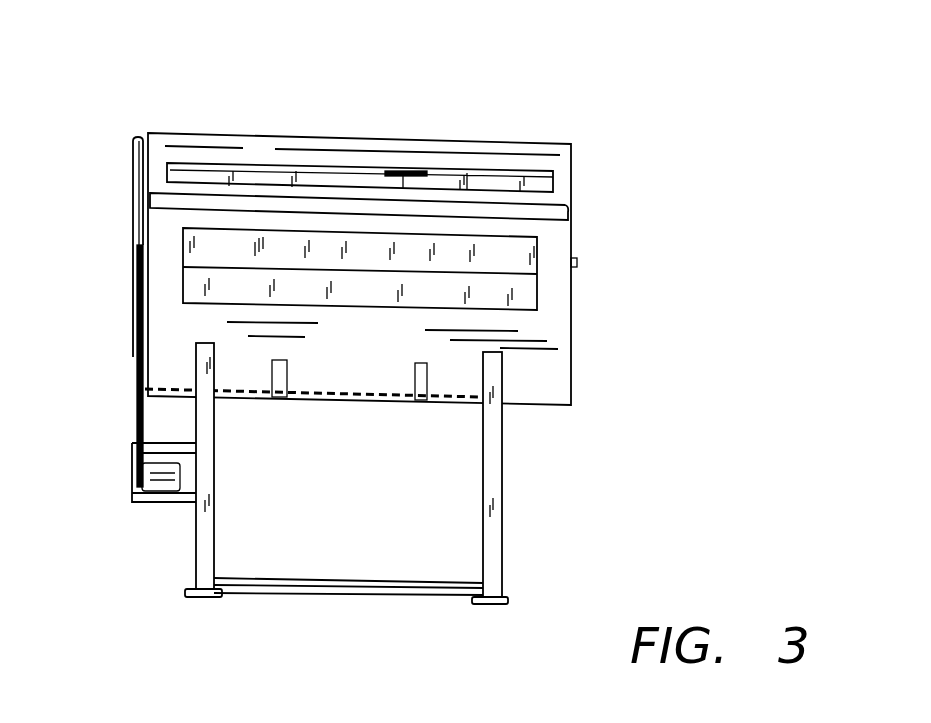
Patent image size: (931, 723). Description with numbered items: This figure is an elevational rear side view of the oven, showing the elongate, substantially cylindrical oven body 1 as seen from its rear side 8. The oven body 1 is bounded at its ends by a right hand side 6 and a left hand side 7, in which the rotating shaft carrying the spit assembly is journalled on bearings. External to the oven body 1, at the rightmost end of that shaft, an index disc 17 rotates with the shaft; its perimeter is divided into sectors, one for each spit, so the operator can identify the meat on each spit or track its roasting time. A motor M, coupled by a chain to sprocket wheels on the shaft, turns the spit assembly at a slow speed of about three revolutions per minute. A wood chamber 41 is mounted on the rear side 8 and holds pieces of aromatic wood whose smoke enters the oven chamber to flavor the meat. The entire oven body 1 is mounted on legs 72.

The oven body 1 is at (507, 115).
The right hand side 6 is at (148, 167).
The left hand side 7 is at (565, 232).
The index disc 17 is at (130, 293).
The wood chamber 41 is at (522, 293).
The rear side 8 is at (360, 361).
The motor M is at (132, 488).
The legs 72 is at (200, 547).